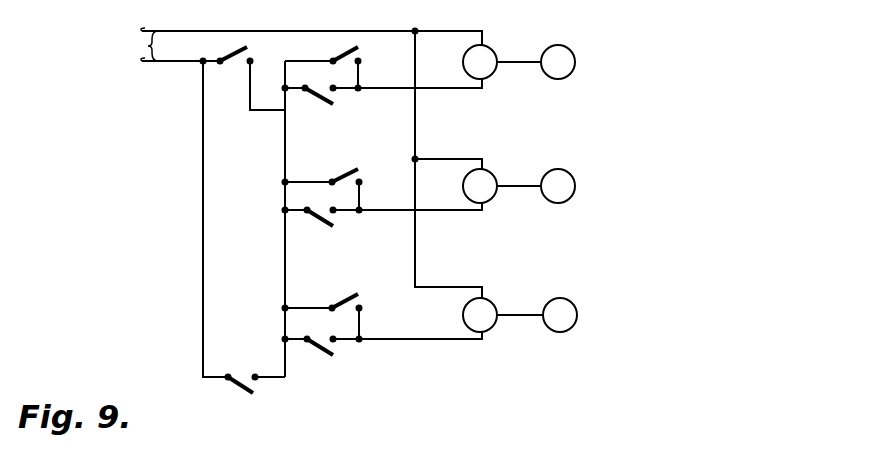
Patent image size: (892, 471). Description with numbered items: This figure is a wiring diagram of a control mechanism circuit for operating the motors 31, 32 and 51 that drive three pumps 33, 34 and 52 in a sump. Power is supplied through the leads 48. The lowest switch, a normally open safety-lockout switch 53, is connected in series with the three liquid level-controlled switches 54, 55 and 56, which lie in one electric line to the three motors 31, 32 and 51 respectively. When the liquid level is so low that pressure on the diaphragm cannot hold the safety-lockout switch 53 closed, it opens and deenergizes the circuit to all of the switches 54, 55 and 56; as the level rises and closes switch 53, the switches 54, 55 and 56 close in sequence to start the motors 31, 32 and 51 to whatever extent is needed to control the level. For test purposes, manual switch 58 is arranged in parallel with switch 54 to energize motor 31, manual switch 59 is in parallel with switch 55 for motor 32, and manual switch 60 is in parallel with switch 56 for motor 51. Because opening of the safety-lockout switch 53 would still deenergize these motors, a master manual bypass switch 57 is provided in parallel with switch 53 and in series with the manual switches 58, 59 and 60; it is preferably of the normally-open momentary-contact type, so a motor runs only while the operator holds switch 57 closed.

The power supply leads 48 is at (148, 46).
The master manual bypass switch 57 is at (246, 46).
The manual switch 60 is at (336, 48).
The switch 56 is at (330, 104).
The manual switch 59 is at (347, 176).
The switch 55 is at (330, 226).
The manual switch 58 is at (335, 305).
The switch 54 is at (330, 355).
The safety-lockout switch 53 is at (244, 393).
The motor 51 is at (491, 74).
The pump 52 is at (569, 74).
The motor 32 is at (491, 198).
The pump 34 is at (569, 198).
The motor 31 is at (491, 327).
The pump 33 is at (571, 327).